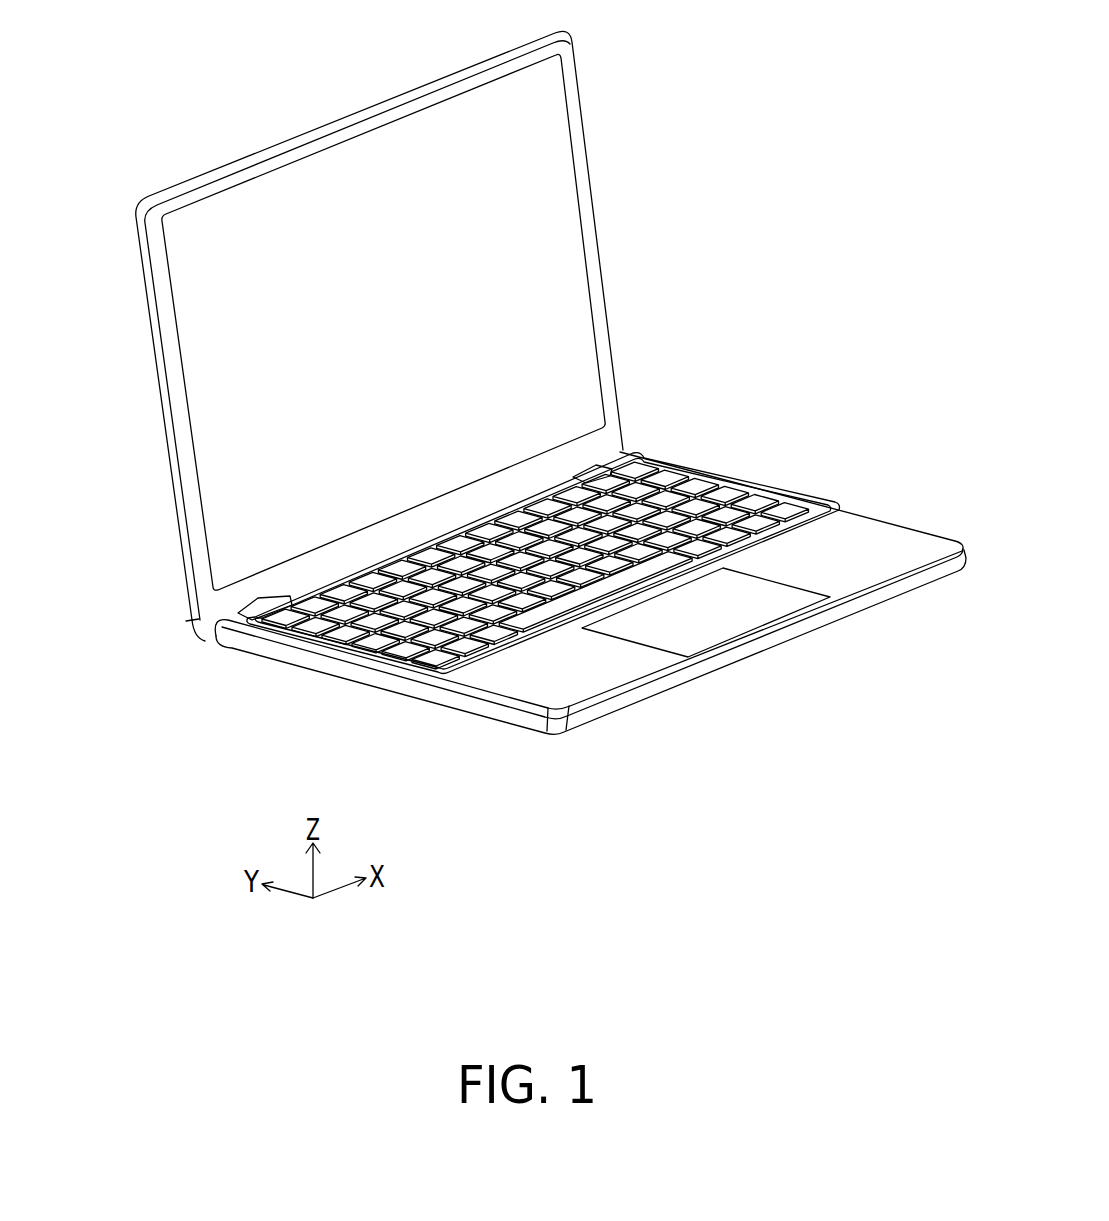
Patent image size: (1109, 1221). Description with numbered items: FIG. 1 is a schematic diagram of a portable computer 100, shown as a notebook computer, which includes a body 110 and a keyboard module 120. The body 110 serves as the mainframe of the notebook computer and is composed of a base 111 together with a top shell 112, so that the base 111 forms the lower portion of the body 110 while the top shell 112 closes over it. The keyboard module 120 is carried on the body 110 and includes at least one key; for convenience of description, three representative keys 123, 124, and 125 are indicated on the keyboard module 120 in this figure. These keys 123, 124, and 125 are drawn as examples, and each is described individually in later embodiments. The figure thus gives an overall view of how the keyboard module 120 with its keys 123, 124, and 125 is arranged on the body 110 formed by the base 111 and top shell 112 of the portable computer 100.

The portable computer 100 is at (523, 467).
The body 110 is at (590, 678).
The base 111 is at (478, 715).
The top shell 112 is at (497, 653).
The keyboard module 120 is at (500, 549).
The key 123 is at (347, 633).
The key 124 is at (413, 582).
The key 125 is at (622, 517).